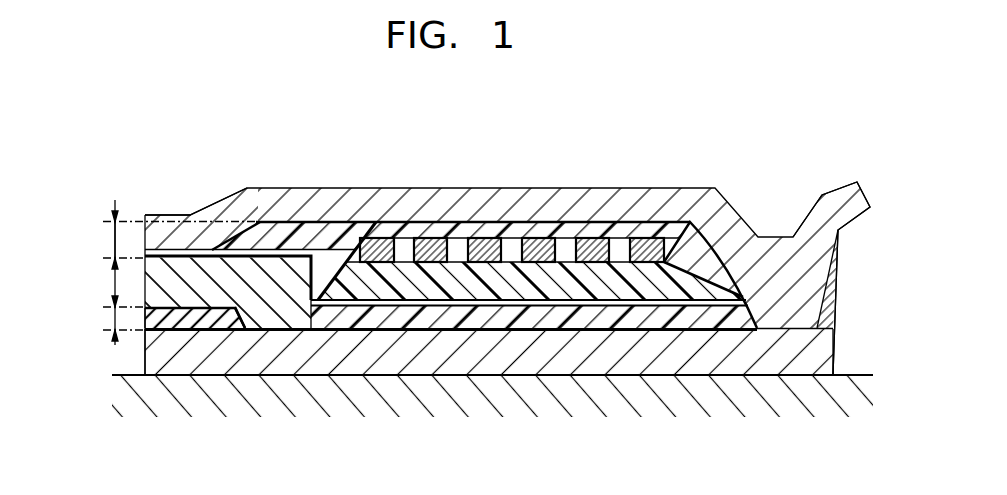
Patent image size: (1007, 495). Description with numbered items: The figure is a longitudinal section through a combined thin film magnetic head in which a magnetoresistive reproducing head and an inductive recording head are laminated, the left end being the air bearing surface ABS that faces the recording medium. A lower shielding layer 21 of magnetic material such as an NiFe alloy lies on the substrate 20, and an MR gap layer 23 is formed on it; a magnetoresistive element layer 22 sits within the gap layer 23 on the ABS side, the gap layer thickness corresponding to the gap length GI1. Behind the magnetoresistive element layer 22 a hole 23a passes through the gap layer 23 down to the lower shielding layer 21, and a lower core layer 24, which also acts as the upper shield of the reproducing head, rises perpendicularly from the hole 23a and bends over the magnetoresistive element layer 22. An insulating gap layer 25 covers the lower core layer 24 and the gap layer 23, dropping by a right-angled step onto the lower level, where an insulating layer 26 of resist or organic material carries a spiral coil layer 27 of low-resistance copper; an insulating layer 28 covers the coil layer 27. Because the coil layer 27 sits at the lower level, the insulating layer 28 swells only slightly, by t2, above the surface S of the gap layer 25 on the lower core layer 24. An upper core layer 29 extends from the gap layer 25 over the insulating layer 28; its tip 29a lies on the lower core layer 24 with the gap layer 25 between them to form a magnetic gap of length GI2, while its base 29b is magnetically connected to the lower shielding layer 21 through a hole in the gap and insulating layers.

The substrate 20 is at (855, 385).
The lower shielding layer 21 is at (558, 347).
The magnetoresistive element layer 22 is at (173, 320).
The MR gap layer (first gap layer) 23 is at (485, 312).
The hole 23a is at (241, 322).
The lower core layer 24 is at (280, 295).
The gap layer (second gap layer) 25 is at (402, 302).
The insulating layer (first insulating layer) 26 is at (674, 268).
The coil layer 27 is at (588, 247).
The insulating layer (second insulating layer) 28 is at (472, 230).
The upper core layer 29 is at (282, 207).
The tip of upper core layer 29a is at (174, 233).
The base of upper core layer 29b is at (780, 270).
The air bearing surface ABS is at (123, 366).
The surface of second gap layer S is at (145, 250).
The swelling amount t2 is at (112, 237).
The gap length Gl1 GI1 is at (112, 318).
The gap length Gl2 GI2 is at (112, 260).